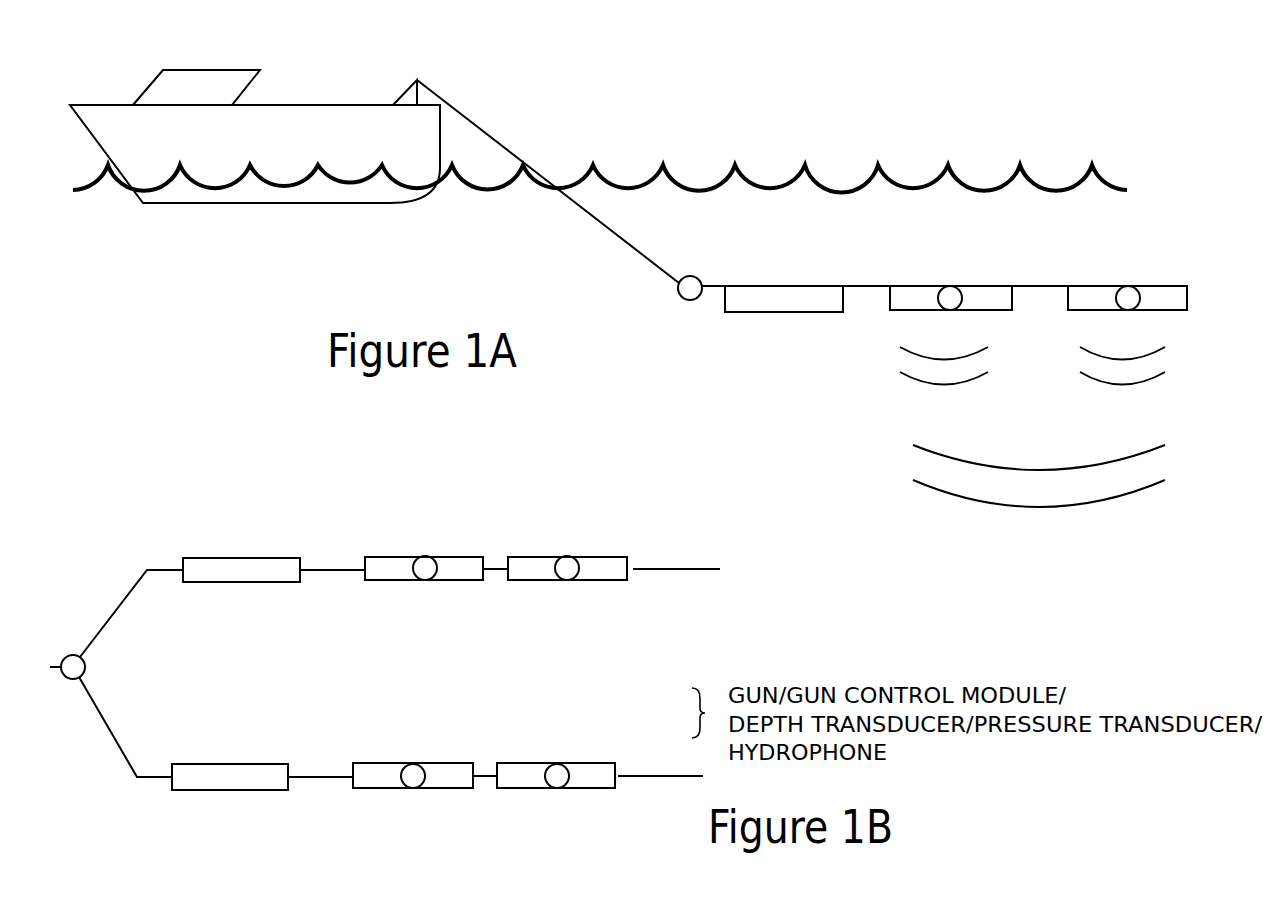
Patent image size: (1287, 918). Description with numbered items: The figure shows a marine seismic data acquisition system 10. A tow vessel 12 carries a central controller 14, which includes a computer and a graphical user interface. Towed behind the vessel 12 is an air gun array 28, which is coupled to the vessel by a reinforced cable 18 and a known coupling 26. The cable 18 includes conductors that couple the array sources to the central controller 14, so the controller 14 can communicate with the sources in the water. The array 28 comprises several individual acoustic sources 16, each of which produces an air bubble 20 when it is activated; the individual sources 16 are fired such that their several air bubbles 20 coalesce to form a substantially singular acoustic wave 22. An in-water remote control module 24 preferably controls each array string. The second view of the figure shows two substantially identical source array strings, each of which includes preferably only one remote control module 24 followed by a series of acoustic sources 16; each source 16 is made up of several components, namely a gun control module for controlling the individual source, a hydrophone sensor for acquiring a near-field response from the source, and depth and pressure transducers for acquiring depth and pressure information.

In FIG. 1A, the marine seismic data acquisition system 10 is at (809, 96).
In FIG. 1A, the tow vessel 12 is at (310, 105).
In FIG. 1A, the central controller 14 is at (107, 105).
In FIG. 1A, the acoustic source 16 is at (912, 286).
In FIG. 1B, the acoustic source 16 is at (390, 557).
In FIG. 1A, the reinforced cable 18 is at (500, 138).
In FIG. 1A, the air bubble 20 is at (918, 409).
In FIG. 1A, the acoustic wave 22 is at (1064, 530).
In FIG. 1A, the remote control module 24 is at (773, 286).
In FIG. 1B, the remote control module 24 is at (193, 558).
In FIG. 1A, the coupling 26 is at (690, 276).
In FIG. 1A, the air gun array 28 is at (724, 356).